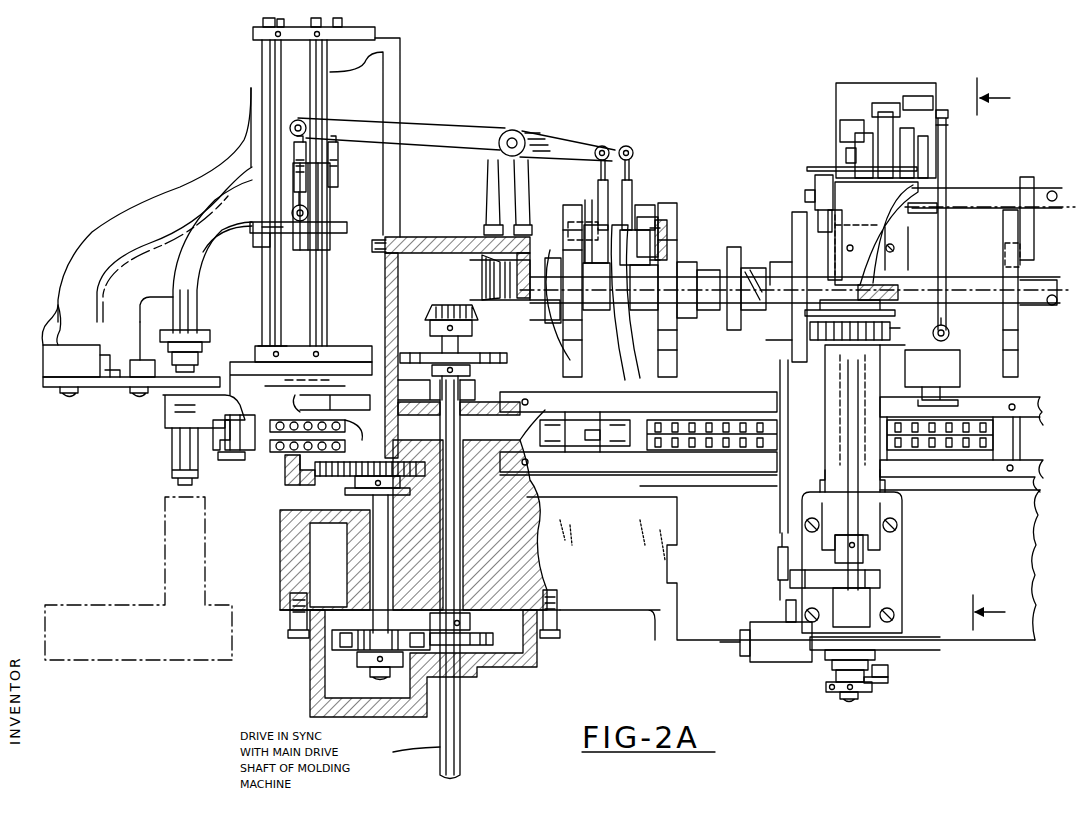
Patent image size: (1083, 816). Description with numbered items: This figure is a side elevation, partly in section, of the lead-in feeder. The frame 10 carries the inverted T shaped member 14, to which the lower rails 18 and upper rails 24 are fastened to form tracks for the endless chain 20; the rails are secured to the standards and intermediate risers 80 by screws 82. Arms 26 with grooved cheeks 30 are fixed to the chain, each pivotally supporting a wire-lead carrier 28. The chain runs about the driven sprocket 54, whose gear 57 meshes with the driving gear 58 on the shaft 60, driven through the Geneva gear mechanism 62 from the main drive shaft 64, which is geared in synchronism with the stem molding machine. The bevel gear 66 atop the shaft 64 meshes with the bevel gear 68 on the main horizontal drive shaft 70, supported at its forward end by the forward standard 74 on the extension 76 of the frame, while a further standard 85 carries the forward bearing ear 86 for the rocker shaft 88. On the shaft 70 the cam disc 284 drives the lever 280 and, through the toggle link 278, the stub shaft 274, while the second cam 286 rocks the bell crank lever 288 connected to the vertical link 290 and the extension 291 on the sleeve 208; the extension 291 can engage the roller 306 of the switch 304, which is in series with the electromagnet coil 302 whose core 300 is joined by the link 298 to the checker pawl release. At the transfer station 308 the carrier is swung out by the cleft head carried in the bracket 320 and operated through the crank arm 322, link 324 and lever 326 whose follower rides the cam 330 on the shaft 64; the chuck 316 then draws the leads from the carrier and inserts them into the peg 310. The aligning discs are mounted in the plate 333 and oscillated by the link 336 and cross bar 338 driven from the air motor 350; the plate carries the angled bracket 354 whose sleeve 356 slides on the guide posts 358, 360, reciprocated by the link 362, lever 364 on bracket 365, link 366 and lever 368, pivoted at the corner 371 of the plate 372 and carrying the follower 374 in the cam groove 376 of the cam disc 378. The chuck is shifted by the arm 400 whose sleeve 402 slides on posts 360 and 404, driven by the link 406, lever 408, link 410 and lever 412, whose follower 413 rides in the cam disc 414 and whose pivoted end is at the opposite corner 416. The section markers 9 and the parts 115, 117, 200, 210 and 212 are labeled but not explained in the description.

The frame 10 is at (692, 635).
The inverted T shaped member 14 is at (995, 450).
The lower plates or rails 18 is at (1038, 485).
The endless chain 20 is at (980, 410).
The upper plates or rails 24 is at (1040, 397).
The arms 26 is at (222, 455).
The wire-lead carrier 28 is at (162, 428).
The grooved cheeks 30 is at (265, 455).
The driven sprocket 54 is at (325, 437).
The gear 57 is at (290, 478).
The driving gear 58 is at (380, 465).
The shaft 60 is at (370, 619).
The Geneva gear mechanism 62 is at (408, 612).
The main drive shaft 64 is at (465, 552).
The bevel gear 66 is at (440, 308).
The second bevel gear 68 is at (480, 270).
The main horizontal drive shaft 70 is at (702, 278).
The forward standard 74 is at (525, 262).
The extension 76 is at (608, 610).
The intermediate risers 80 is at (1022, 428).
The screws 82 is at (522, 462).
The standard 85 is at (895, 325).
The forward bearing ear 86 is at (815, 185).
The rocker shaft 88 is at (996, 190).
The bracket 115 is at (1034, 240).
The collar 117 is at (1018, 340).
The transfer assembly 200 is at (805, 118).
The long sleeve 208 is at (868, 568).
The column housing 210 is at (897, 502).
The link 212 is at (862, 560).
The stub shaft 274 is at (848, 700).
The toggle link 278 is at (890, 670).
The lever 280 is at (815, 355).
The cam disc 284 is at (790, 225).
The second cam 286 is at (733, 250).
The bell crank lever 288 is at (750, 268).
The vertical link 290 is at (778, 508).
The extension 291 is at (820, 588).
The link 298 is at (947, 248).
The core 300 is at (950, 345).
The electromagnet coil 302 is at (958, 368).
The switch 304 is at (782, 655).
The roller 306 is at (786, 602).
The transfer station 308 is at (522, 105).
The peg 310 is at (163, 536).
The chuck 316 is at (212, 345).
The bracket 320 is at (383, 213).
The crank arm 322 is at (330, 405).
The link 324 is at (310, 372).
The lever 326 is at (415, 370).
The cam 330 is at (484, 356).
The plate 333 is at (88, 385).
The link 336 is at (160, 378).
The cross bar 338 is at (140, 360).
The air motor 350 is at (45, 370).
The ribbed angled bracket 354 is at (85, 250).
The sleeve 356 is at (325, 250).
The guide post 358 is at (262, 68).
The guide post 360 is at (383, 69).
The link 362 is at (338, 160).
The lever 364 is at (603, 146).
The bracket 365 is at (490, 198).
The link 366 is at (642, 225).
The lever 368 is at (660, 232).
The upper corner 371 is at (665, 218).
The plate 372 is at (575, 270).
The cam follower 374 is at (662, 238).
The side cam groove 376 is at (670, 252).
The cam disc 378 is at (676, 348).
The arm 400 is at (190, 290).
The sleeve 402 is at (330, 200).
The third guide post 404 is at (275, 304).
The link 406 is at (293, 188).
The lever 408 is at (430, 128).
The link 410 is at (605, 198).
The lever 412 is at (593, 222).
The cam follower 413 is at (565, 238).
The cam disc 414 is at (575, 355).
The corner 416 is at (630, 200).
The section line 9 is at (1002, 354).